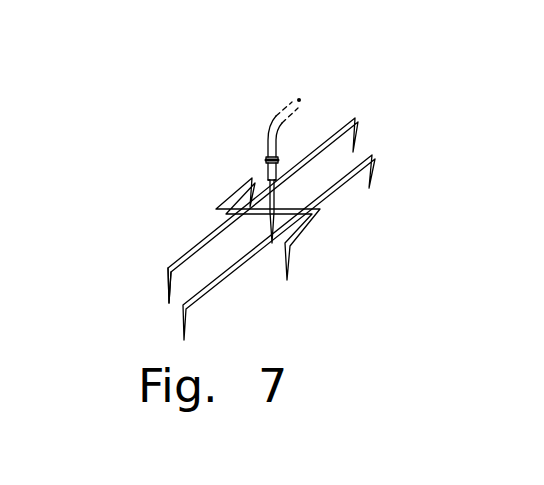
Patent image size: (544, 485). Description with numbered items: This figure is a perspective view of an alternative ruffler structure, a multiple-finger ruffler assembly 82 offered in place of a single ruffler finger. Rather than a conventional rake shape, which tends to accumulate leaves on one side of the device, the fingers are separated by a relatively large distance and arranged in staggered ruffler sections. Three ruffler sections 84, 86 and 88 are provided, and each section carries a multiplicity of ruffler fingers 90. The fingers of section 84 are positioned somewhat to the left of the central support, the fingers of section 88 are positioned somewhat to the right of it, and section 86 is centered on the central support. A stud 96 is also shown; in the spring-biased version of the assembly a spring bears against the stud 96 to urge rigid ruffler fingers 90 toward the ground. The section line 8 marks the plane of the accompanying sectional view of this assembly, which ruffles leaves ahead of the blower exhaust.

The ruffler assembly 82 is at (396, 116).
The ruffler section 84 is at (183, 248).
The ruffler section 86 is at (230, 270).
The ruffler section 88 is at (307, 230).
The ruffler fingers 90 is at (167, 289).
The stud 96 is at (278, 188).
The section line 8- 8 is at (430, 165).